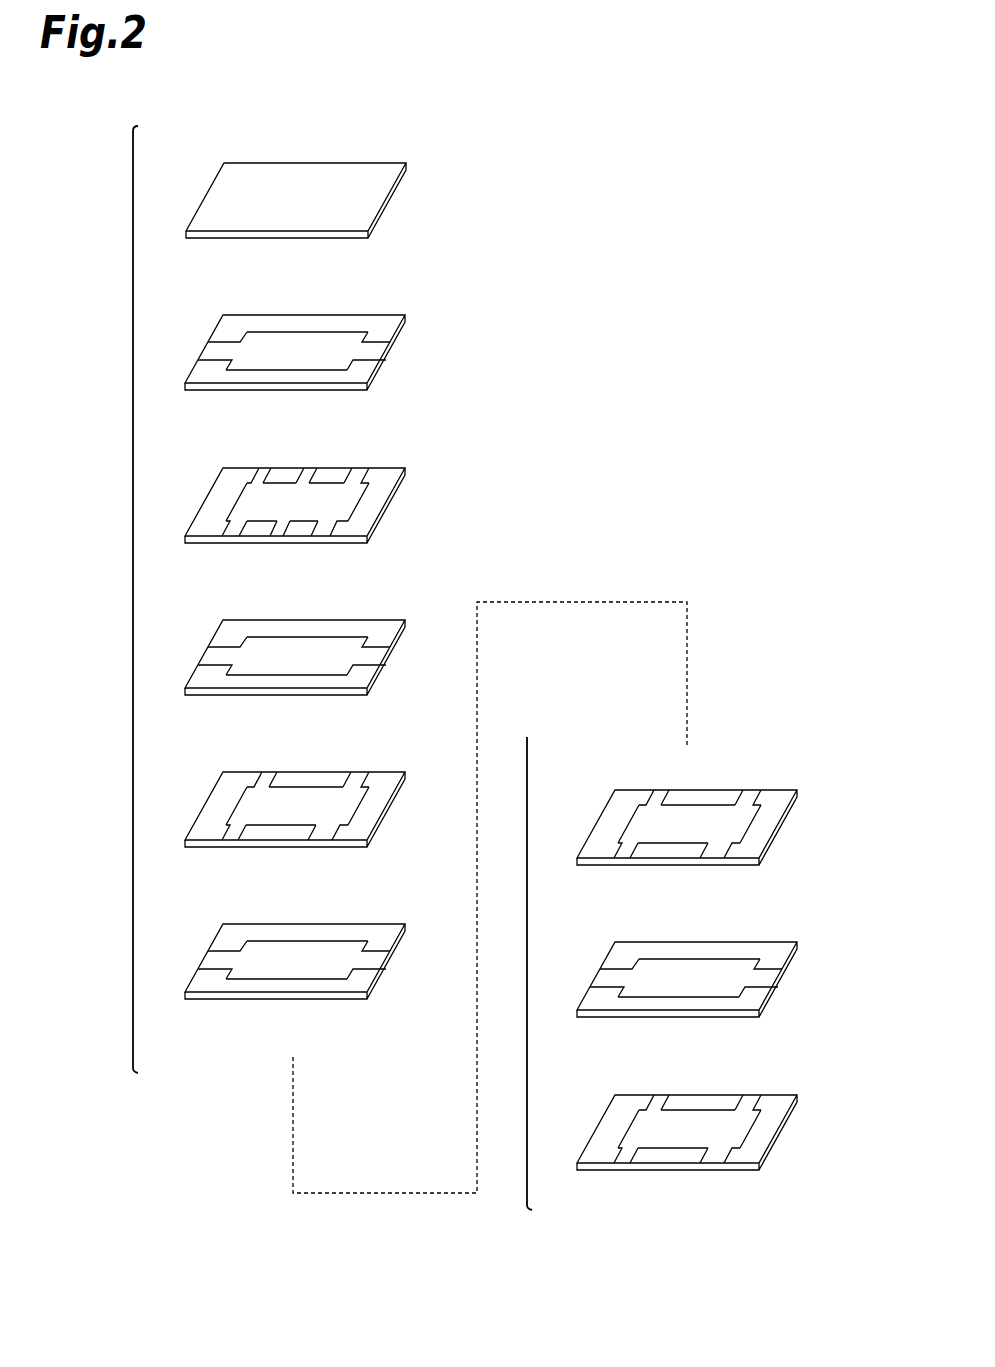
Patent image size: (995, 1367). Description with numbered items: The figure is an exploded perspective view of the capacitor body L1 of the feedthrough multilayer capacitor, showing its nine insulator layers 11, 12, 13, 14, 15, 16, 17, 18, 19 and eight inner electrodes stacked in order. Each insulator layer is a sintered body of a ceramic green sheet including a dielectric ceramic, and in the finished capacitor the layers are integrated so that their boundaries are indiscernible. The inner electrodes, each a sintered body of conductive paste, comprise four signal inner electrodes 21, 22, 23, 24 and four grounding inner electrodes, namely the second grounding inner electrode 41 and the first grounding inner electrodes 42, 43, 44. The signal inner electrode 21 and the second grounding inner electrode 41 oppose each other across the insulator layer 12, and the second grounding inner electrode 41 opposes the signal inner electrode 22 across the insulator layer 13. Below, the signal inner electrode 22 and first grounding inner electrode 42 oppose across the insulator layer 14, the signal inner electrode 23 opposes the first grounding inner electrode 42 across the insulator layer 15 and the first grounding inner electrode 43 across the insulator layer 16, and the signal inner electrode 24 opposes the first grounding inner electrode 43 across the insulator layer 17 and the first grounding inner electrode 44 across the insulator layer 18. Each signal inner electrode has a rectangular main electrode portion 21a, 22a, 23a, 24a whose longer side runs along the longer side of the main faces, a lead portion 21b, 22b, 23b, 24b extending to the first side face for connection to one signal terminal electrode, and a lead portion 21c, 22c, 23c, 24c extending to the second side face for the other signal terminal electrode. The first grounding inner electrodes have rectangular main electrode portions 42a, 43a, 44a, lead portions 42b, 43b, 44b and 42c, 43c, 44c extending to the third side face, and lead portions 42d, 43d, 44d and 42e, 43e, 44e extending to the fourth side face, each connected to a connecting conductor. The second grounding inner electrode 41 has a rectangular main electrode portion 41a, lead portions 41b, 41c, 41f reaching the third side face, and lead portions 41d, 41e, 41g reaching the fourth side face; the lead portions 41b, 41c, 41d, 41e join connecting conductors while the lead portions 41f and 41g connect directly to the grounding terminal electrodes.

The capacitor body L1 is at (133, 622).
The insulator layer 11 is at (395, 163).
The insulator layer 12 is at (393, 316).
The insulator layer 13 is at (393, 468).
The insulator layer 14 is at (393, 621).
The insulator layer 15 is at (393, 772).
The insulator layer 16 is at (393, 925).
The insulator layer 17 is at (784, 790).
The insulator layer 18 is at (785, 943).
The insulator layer 19 is at (784, 1095).
The signal inner electrode 21 is at (298, 354).
The main electrode portion 21a is at (333, 358).
The lead portion 21b is at (225, 350).
The lead portion 21c is at (372, 347).
The signal inner electrode 22 is at (298, 659).
The main electrode portion 22a is at (333, 663).
The lead portion 22b is at (225, 655).
The lead portion 22c is at (372, 652).
The signal inner electrode 23 is at (298, 963).
The main electrode portion 23a is at (333, 967).
The lead portion 23b is at (225, 959).
The lead portion 23c is at (372, 956).
The signal inner electrode 24 is at (690, 981).
The main electrode portion 24a is at (725, 985).
The lead portion 24b is at (617, 977).
The lead portion 24c is at (764, 974).
The second grounding inner electrode 41 is at (294, 507).
The main electrode portion 41a is at (337, 500).
The lead portion 41b is at (235, 531).
The lead portion 41c is at (324, 531).
The lead portion 41d is at (265, 474).
The lead portion 41e is at (358, 474).
The lead portion 41f is at (279, 531).
The lead portion 41g is at (312, 474).
The first grounding inner electrode 42 is at (294, 809).
The main electrode portion 42a is at (337, 805).
The lead portion 42b is at (235, 834).
The lead portion 42c is at (324, 835).
The lead portion 42d is at (264, 778).
The lead portion 42e is at (355, 778).
The first grounding inner electrode 43 is at (687, 829).
The main electrode portion 43a is at (727, 825).
The lead portion 43b is at (625, 853).
The lead portion 43c is at (715, 853).
The lead portion 43d is at (655, 797).
The lead portion 43e is at (748, 797).
The first grounding inner electrode 44 is at (687, 1134).
The main electrode portion 44a is at (727, 1130).
The lead portion 44b is at (625, 1158).
The lead portion 44c is at (715, 1158).
The lead portion 44d is at (655, 1102).
The lead portion 44e is at (748, 1102).